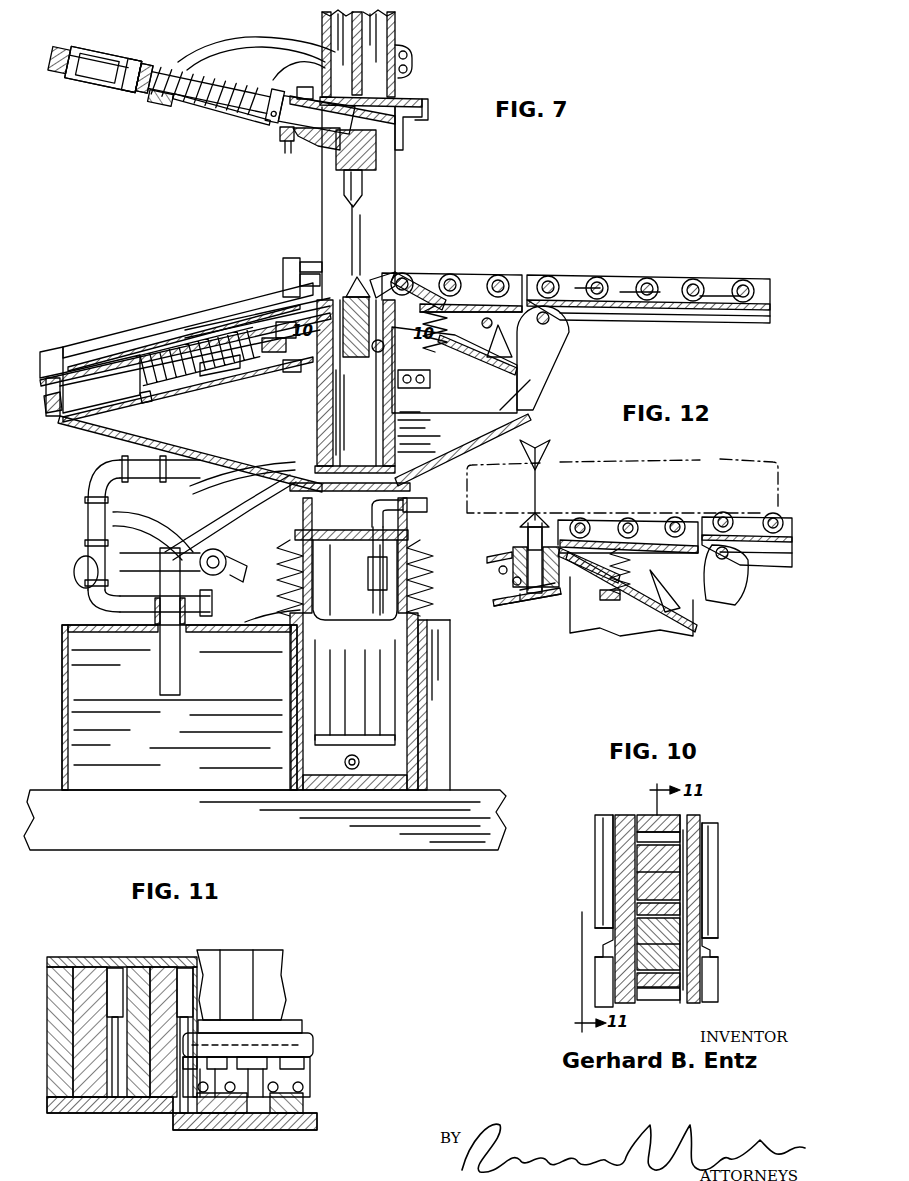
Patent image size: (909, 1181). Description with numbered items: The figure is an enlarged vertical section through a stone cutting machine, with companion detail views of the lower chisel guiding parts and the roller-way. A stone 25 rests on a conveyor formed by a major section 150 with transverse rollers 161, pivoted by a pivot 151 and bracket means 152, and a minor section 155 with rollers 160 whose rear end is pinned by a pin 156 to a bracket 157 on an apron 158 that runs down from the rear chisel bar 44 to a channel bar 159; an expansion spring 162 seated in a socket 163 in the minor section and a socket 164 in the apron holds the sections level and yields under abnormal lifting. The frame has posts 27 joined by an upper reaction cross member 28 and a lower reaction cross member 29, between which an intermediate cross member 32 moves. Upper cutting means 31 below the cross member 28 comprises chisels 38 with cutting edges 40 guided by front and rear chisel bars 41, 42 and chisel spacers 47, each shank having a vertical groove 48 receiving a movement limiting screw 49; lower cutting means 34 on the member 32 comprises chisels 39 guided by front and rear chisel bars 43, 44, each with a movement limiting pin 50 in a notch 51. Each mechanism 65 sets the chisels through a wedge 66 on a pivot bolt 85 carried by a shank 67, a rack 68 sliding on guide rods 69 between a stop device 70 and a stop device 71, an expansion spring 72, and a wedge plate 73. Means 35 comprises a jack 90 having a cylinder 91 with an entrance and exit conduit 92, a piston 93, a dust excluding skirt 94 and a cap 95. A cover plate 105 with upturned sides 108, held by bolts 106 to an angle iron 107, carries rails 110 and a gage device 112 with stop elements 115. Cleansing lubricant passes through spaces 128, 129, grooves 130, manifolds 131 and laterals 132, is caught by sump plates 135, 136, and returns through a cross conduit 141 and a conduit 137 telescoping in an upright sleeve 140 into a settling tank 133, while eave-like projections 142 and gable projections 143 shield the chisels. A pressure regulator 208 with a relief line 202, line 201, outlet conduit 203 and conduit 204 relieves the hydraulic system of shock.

In FIG. 12, the stone 25 is at (718, 460).
In FIG. 7, the posts 27 is at (394, 235).
In FIG. 7, the upper reaction cross member 28 is at (340, 43).
In FIG. 7, the lower reaction cross member 29 is at (440, 680).
In FIG. 7, the cutting means 31 is at (396, 180).
In FIG. 7, the intermediate cross member 32 is at (340, 426).
In FIG. 7, the cutting means 34 is at (380, 282).
In FIG. 7, the means for actuating the intermediate cross member 35 is at (412, 546).
In FIG. 7, the chisels 38 is at (362, 249).
In FIG. 12, the chisels 38 is at (548, 453).
In FIG. 7, the chisels 39 is at (352, 278).
In FIG. 12, the chisels 39 is at (535, 533).
In FIG. 10, the chisels 39 is at (680, 858).
In FIG. 11, the chisels 39 is at (245, 960).
In FIG. 7, the cutting edges 40 is at (352, 205).
In FIG. 12, the cutting edges 40 is at (532, 518).
In FIG. 7, the front chisel bar 41 is at (296, 141).
In FIG. 7, the rear chisel bar 42 is at (378, 156).
In FIG. 7, the front chisel bar 43 is at (318, 273).
In FIG. 12, the front chisel bar 43 is at (500, 546).
In FIG. 10, the front chisel bar 43 is at (617, 854).
In FIG. 11, the front chisel bar 43 is at (302, 1038).
In FIG. 7, the rear chisel bar 44 is at (392, 290).
In FIG. 12, the rear chisel bar 44 is at (566, 598).
In FIG. 10, the rear chisel bar 44 is at (690, 876).
In FIG. 7, the chisel spacers 47 is at (410, 125).
In FIG. 12, the chisel spacers 47 is at (542, 598).
In FIG. 10, the chisel spacers 47 is at (680, 828).
In FIG. 11, the chisel spacers 47 is at (120, 1095).
In FIG. 7, the vertical groove 48 is at (348, 180).
In FIG. 7, the movement limiting screw 49 is at (335, 145).
In FIG. 7, the movement limiting pin 50 is at (384, 346).
In FIG. 12, the movement limiting pin 50 is at (512, 582).
In FIG. 11, the movement limiting pin 50 is at (296, 1098).
In FIG. 12, the notch 51 is at (498, 570).
In FIG. 11, the notch 51 is at (305, 1063).
In FIG. 7, the mechanism 65 is at (122, 86).
In FIG. 7, the wedge 66 is at (282, 142).
In FIG. 12, the wedge 66 is at (498, 600).
In FIG. 11, the wedge 66 is at (236, 1116).
In FIG. 7, the shank 67 is at (190, 108).
In FIG. 7, the rack 68 is at (147, 68).
In FIG. 7, the guide rods 69 is at (76, 50).
In FIG. 7, the stop device 70 is at (112, 62).
In FIG. 7, the stop device 71 is at (54, 54).
In FIG. 7, the expansion spring 72 is at (180, 102).
In FIG. 7, the wedge plate 73 is at (402, 96).
In FIG. 12, the wedge plate 73 is at (492, 610).
In FIG. 7, the pivot bolt 85 is at (278, 112).
In FIG. 7, the jack 90 is at (414, 638).
In FIG. 7, the cylinder 91 is at (418, 756).
In FIG. 7, the entrance and exit conduit 92 is at (360, 760).
In FIG. 7, the piston 93 is at (320, 538).
In FIG. 7, the dust excluding skirt 94 is at (284, 582).
In FIG. 7, the cap 95 is at (408, 490).
In FIG. 7, the cover plate 105 is at (92, 338).
In FIG. 7, the bolts 106 is at (50, 358).
In FIG. 7, the angle iron 107 is at (54, 390).
In FIG. 7, the upturned sides 108 is at (127, 328).
In FIG. 7, the rails 110 is at (232, 318).
In FIG. 7, the gage device 112 is at (286, 263).
In FIG. 7, the stop elements 115 is at (295, 260).
In FIG. 10, the spaces 128 is at (675, 886).
In FIG. 10, the spaces 129 is at (640, 838).
In FIG. 11, the spaces 129 is at (110, 1078).
In FIG. 12, the grooves 130 is at (524, 593).
In FIG. 10, the grooves 130 is at (635, 883).
In FIG. 10, the manifolds 131 is at (712, 918).
In FIG. 11, the manifolds 131 is at (272, 1038).
In FIG. 10, the laterals 132 is at (602, 940).
In FIG. 7, the settling tank 133 is at (76, 694).
In FIG. 7, the sump plate 135 is at (192, 480).
In FIG. 7, the sump plate 136 is at (440, 462).
In FIG. 7, the conduit 137 is at (232, 526).
In FIG. 7, the upright sleeve 140 is at (190, 618).
In FIG. 7, the cross conduit 141 is at (335, 467).
In FIG. 12, the eave-like projections 142 is at (520, 534).
In FIG. 11, the eave-like projections 142 is at (250, 1008).
In FIG. 11, the gable projections 143 is at (125, 956).
In FIG. 7, the major section 150 is at (622, 276).
In FIG. 12, the major section 150 is at (748, 563).
In FIG. 7, the pivot 151 is at (550, 320).
In FIG. 7, the bracket means 152 is at (542, 368).
In FIG. 7, the minor section 155 is at (480, 286).
In FIG. 12, the minor section 155 is at (656, 528).
In FIG. 7, the pin 156 is at (483, 323).
In FIG. 7, the bracket 157 is at (512, 338).
In FIG. 7, the apron 158 is at (454, 370).
In FIG. 7, the channel bar 159 is at (522, 383).
In FIG. 7, the rollers 160 is at (500, 278).
In FIG. 12, the rollers 160 is at (585, 520).
In FIG. 7, the rollers 161 is at (560, 280).
In FIG. 12, the rollers 161 is at (763, 513).
In FIG. 7, the expansion spring 162 is at (434, 303).
In FIG. 12, the expansion spring 162 is at (631, 593).
In FIG. 12, the socket 163 is at (638, 571).
In FIG. 7, the socket 164 is at (452, 350).
In FIG. 12, the socket 164 is at (595, 598).
In FIG. 7, the line 201 is at (226, 550).
In FIG. 7, the relief line 202 is at (150, 530).
In FIG. 7, the outlet conduit 203 is at (206, 482).
In FIG. 7, the conduit 204 is at (108, 602).
In FIG. 7, the pressure regulator 208 is at (80, 578).